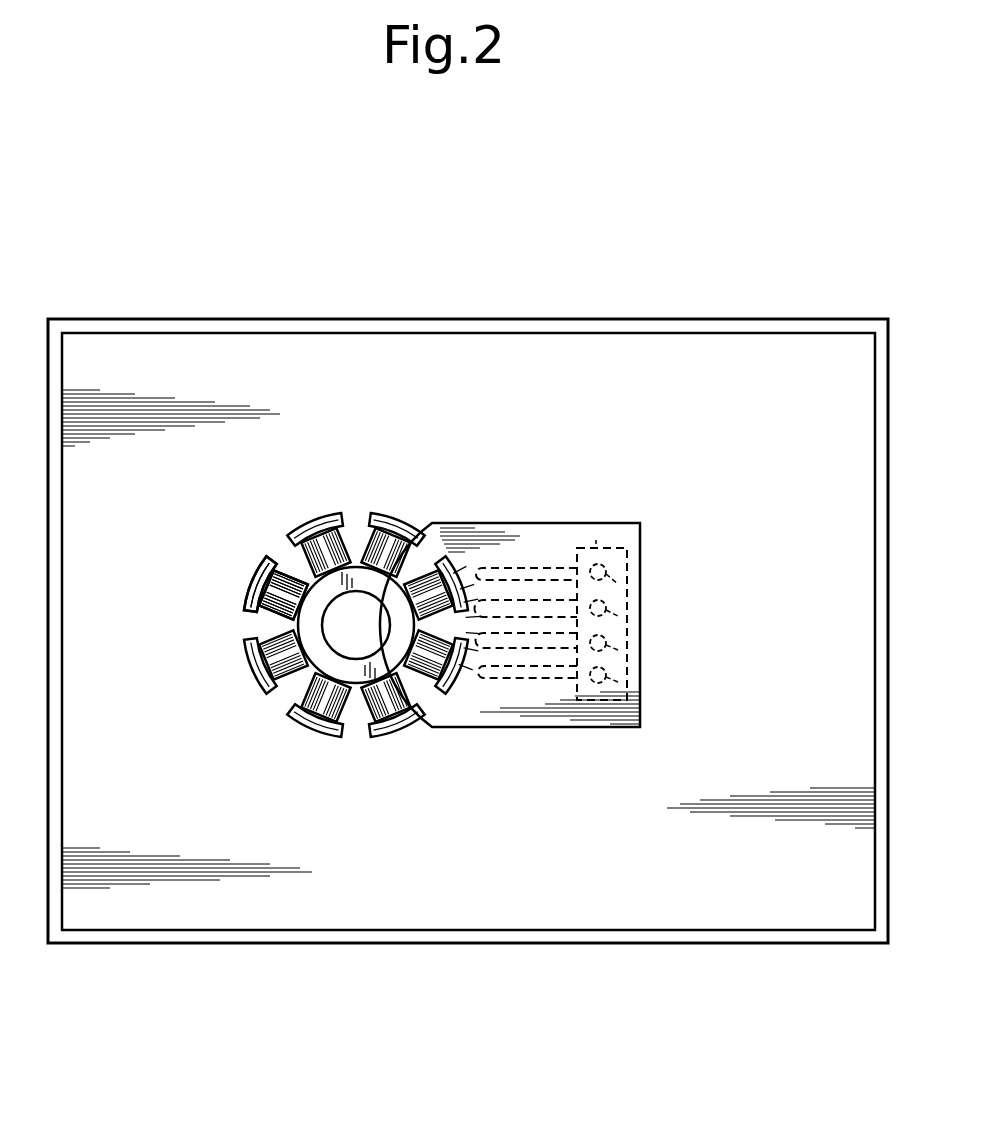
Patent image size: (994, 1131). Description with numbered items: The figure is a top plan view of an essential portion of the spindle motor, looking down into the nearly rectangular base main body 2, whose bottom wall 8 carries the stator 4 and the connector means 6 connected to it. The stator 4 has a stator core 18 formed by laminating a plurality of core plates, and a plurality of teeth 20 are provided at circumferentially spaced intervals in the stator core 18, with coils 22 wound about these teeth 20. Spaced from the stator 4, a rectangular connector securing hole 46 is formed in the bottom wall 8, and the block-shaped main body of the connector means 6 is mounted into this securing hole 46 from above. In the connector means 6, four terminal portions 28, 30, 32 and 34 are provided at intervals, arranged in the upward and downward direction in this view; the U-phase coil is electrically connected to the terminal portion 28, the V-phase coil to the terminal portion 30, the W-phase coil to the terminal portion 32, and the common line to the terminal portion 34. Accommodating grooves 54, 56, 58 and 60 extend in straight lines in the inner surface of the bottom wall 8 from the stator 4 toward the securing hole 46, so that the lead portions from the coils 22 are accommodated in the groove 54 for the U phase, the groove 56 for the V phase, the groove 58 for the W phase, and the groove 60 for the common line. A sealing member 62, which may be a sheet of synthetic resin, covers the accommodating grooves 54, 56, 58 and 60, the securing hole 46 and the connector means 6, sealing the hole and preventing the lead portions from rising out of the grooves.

The base main body 2 is at (103, 312).
The bottom wall 8 is at (230, 358).
The stator 4 is at (309, 620).
The stator core 18 is at (260, 688).
The teeth 20 is at (331, 738).
The coils 22 is at (415, 535).
The connector means 6 is at (628, 555).
The connector securing hole 46 is at (648, 579).
The terminal portion 34 is at (606, 560).
The terminal portion 32 is at (640, 620).
The terminal portion 30 is at (606, 640).
The terminal portion 28 is at (610, 687).
The accommodating groove 54 is at (492, 675).
The accommodating groove 56 is at (543, 650).
The accommodating groove 58 is at (547, 650).
The accommodating groove 60 is at (490, 545).
The sealing member 62 is at (596, 538).